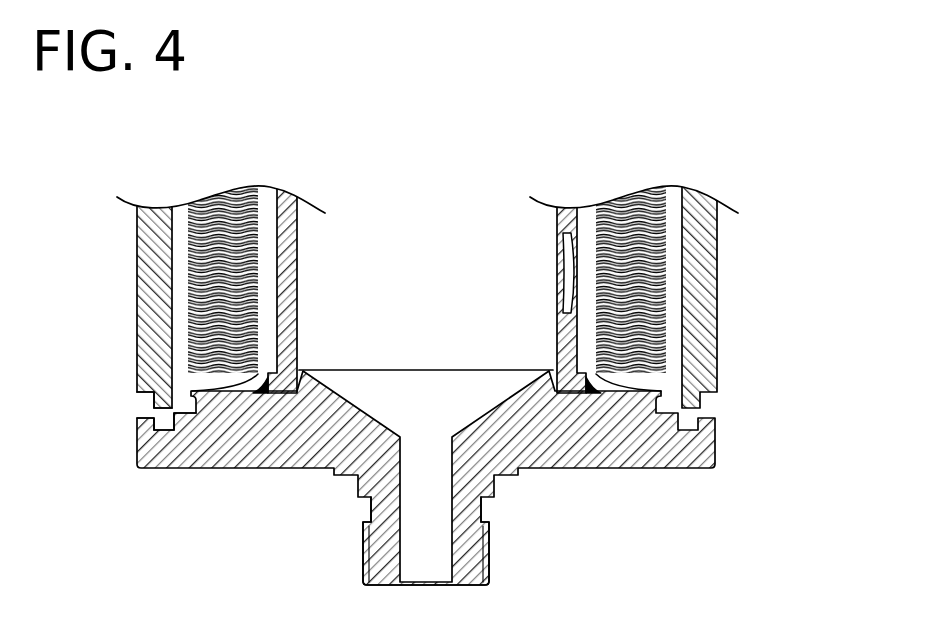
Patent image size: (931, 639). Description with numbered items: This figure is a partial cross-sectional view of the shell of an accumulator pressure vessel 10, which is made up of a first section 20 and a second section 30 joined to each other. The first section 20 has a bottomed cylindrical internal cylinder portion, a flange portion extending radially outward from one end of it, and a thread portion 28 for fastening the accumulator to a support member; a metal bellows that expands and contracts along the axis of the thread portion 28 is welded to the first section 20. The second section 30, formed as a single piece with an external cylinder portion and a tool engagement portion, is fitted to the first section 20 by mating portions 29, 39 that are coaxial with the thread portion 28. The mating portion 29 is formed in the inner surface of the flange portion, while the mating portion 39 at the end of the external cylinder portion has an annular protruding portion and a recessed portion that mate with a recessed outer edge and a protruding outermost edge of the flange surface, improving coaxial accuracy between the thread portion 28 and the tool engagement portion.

The pressure vessel 10 is at (476, 384).
The first section 20 is at (445, 479).
The thread portion 28 is at (503, 522).
The mating portion 29 is at (152, 418).
The second section 30 is at (445, 294).
The mating portion 39 is at (152, 402).